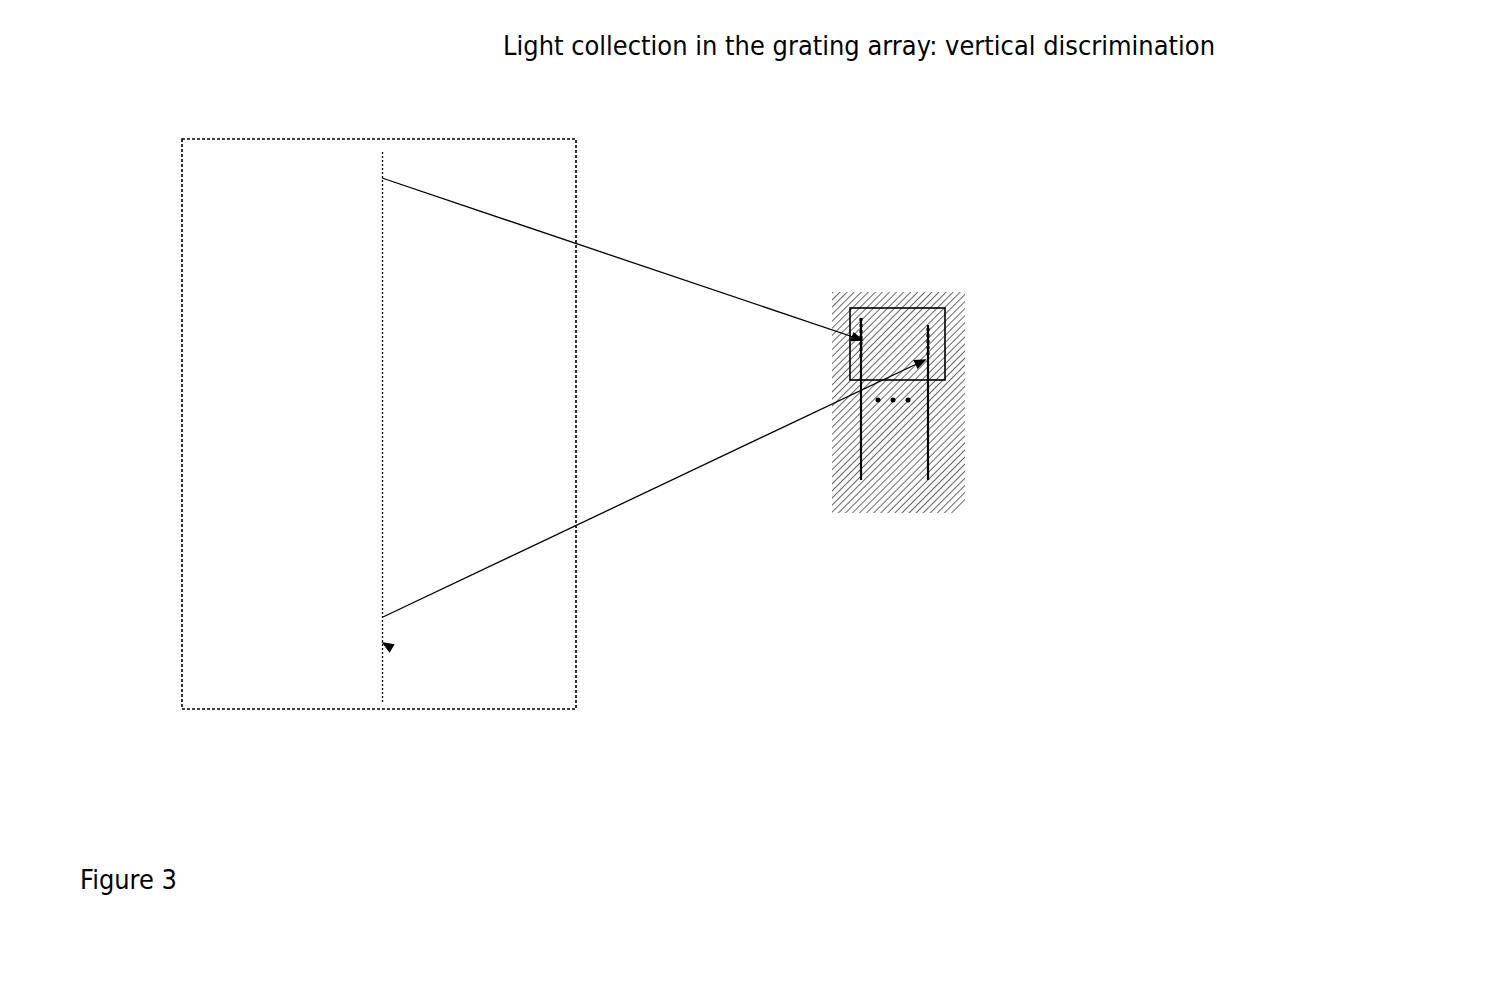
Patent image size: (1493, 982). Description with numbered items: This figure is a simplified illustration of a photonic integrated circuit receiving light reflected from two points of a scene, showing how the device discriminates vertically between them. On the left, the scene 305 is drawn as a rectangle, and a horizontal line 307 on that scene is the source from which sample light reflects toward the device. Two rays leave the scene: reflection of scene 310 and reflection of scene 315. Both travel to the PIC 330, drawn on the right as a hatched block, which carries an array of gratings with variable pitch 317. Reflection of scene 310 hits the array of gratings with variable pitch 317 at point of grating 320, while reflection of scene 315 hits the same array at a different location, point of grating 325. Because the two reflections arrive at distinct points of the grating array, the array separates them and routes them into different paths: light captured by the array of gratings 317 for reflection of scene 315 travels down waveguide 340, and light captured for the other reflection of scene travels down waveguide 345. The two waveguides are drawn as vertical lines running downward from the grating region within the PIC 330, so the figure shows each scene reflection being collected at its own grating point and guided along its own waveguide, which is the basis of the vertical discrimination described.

The scene 305 is at (379, 424).
The horizontal line 307 is at (383, 643).
The reflection of scene 310 is at (768, 312).
The reflection of scene 315 is at (625, 515).
The array of gratings with variable pitch 317 is at (960, 381).
The point of grating 320 is at (857, 316).
The point of grating 325 is at (925, 358).
The PIC 330 is at (898, 425).
The waveguide 340 is at (930, 432).
The waveguide 345 is at (865, 470).